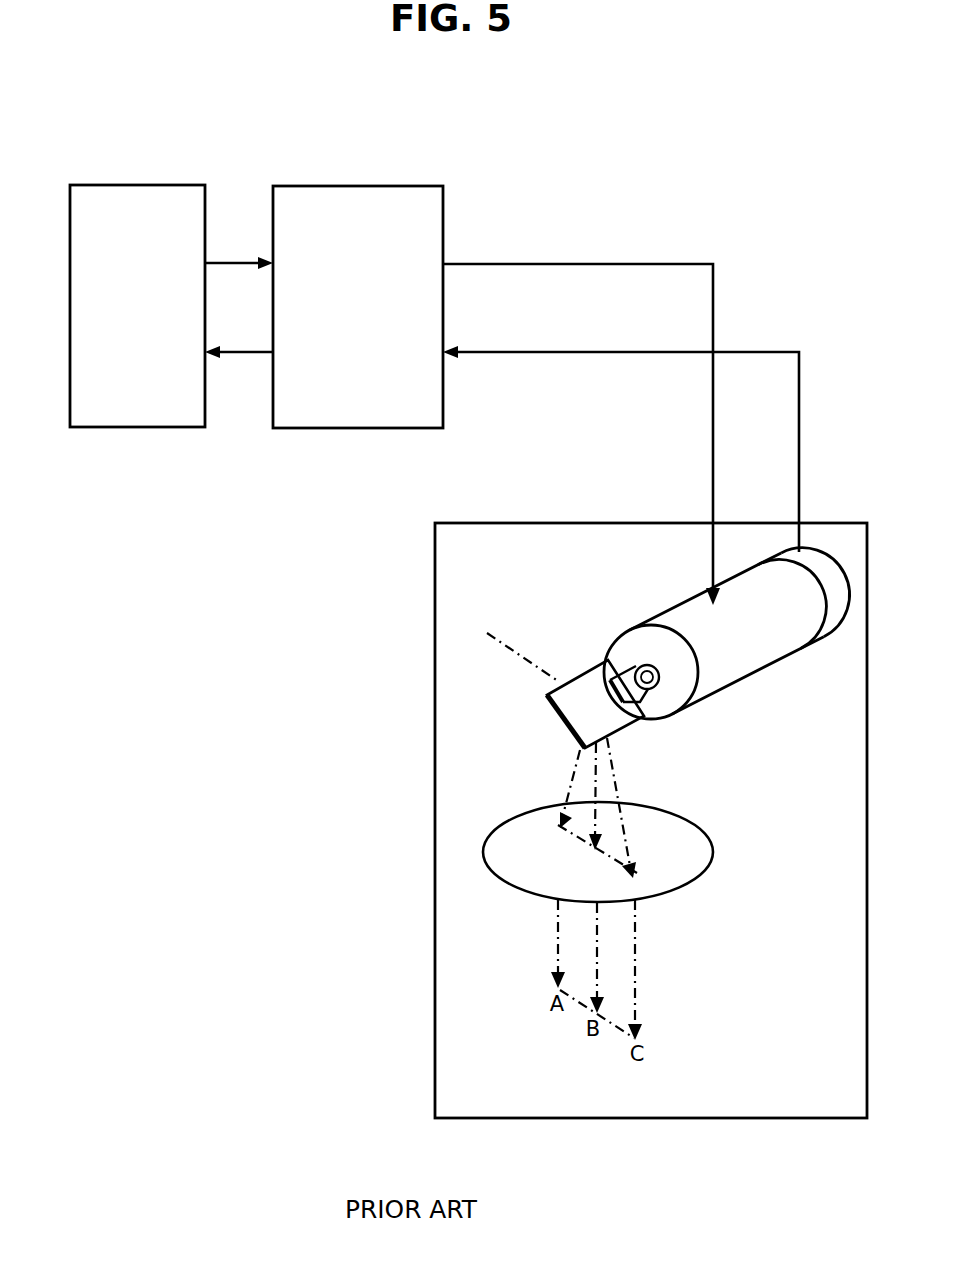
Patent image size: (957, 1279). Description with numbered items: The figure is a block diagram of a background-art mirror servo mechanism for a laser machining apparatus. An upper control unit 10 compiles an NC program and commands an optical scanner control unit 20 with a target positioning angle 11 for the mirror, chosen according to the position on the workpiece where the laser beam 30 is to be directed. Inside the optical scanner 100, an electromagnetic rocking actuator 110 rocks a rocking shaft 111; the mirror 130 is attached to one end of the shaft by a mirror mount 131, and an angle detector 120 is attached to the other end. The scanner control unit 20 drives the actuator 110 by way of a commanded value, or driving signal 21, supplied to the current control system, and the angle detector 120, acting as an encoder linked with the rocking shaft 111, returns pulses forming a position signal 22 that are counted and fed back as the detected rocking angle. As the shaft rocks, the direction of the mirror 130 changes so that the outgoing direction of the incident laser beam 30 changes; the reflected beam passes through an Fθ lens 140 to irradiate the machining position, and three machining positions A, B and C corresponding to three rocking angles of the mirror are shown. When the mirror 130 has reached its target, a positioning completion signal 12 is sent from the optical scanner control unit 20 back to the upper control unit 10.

The upper control unit 10 is at (140, 185).
The optical scanner control unit 20 is at (366, 186).
The target positioning angle 11 is at (240, 261).
The positioning completion signal 12 is at (245, 354).
The commanded value (driving signal) 21 is at (563, 263).
The pulses (position signal) 22 is at (556, 355).
The laser beam 30 is at (528, 657).
The optical scanner 100 is at (777, 693).
The electromagnetic rocking actuator 110 is at (678, 617).
The rocking shaft 111 is at (652, 673).
The angle detector 120 is at (820, 627).
The mirror 130 is at (573, 717).
The mirror mount 131 is at (640, 690).
The Fθ lens 140 is at (713, 855).